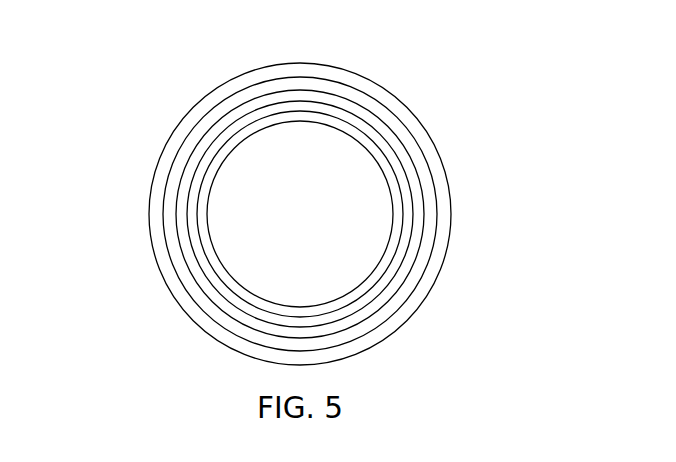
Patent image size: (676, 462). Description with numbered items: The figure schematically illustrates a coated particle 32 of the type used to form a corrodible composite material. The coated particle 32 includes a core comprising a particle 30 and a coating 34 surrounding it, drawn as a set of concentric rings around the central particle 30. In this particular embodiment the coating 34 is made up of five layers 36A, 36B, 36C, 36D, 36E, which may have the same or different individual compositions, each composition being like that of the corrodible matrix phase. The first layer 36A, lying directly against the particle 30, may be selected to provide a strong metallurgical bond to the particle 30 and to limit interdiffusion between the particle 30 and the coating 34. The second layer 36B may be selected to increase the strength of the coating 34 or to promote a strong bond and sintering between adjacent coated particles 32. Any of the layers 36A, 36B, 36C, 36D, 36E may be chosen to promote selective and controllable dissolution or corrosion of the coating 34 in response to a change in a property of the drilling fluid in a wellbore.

The particle 30 is at (314, 224).
The coated particle 32 is at (135, 98).
The coating 34 is at (147, 185).
The first layer 36A is at (340, 121).
The second layer 36B is at (364, 131).
The third layer 36C is at (397, 147).
The fourth layer 36D is at (425, 175).
The fifth layer 36E is at (442, 212).